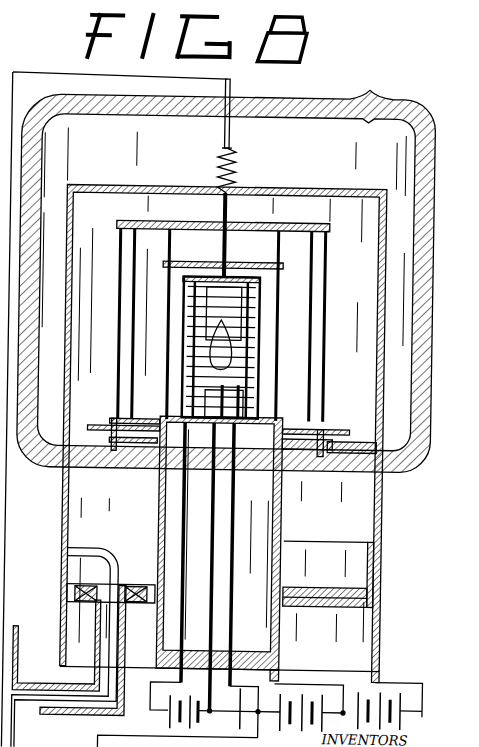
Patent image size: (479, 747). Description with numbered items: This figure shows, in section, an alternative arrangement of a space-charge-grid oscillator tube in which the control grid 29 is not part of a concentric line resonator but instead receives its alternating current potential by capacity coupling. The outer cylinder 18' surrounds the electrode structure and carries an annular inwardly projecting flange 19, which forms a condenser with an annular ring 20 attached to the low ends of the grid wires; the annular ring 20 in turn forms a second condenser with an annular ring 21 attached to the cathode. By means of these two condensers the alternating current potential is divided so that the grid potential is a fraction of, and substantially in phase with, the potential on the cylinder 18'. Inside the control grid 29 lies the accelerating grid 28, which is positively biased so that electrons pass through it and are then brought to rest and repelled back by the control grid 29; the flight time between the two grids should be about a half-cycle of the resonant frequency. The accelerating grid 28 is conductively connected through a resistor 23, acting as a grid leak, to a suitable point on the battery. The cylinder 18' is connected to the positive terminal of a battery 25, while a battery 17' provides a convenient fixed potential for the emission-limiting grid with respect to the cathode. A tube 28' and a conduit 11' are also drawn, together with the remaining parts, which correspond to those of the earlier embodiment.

The annular inwardly projecting flange 19 is at (381, 434).
The cylinder 18' is at (242, 434).
The electrode tube 28' is at (240, 548).
The resistor 23 is at (244, 185).
The control grid 29 is at (329, 271).
The accelerating grid 28 is at (232, 325).
The annular ring 20 is at (340, 423).
The annular ring 21 is at (143, 452).
The conduit 11' is at (83, 647).
The battery 17' is at (178, 714).
The battery 25 is at (415, 719).